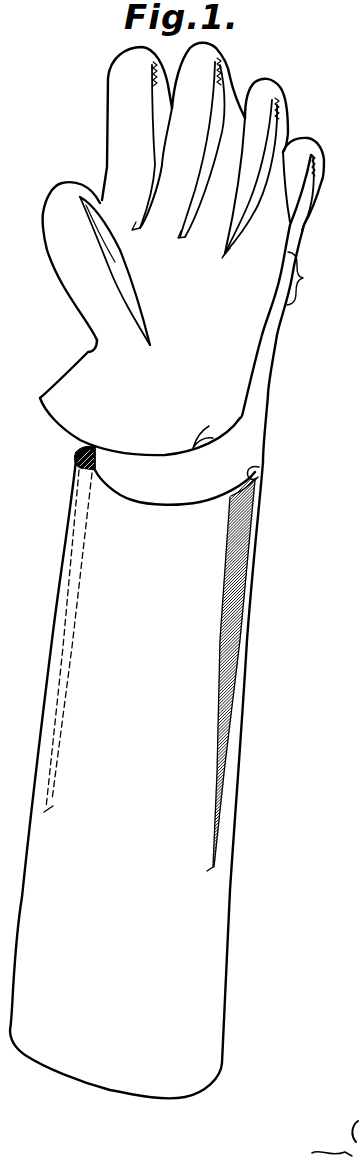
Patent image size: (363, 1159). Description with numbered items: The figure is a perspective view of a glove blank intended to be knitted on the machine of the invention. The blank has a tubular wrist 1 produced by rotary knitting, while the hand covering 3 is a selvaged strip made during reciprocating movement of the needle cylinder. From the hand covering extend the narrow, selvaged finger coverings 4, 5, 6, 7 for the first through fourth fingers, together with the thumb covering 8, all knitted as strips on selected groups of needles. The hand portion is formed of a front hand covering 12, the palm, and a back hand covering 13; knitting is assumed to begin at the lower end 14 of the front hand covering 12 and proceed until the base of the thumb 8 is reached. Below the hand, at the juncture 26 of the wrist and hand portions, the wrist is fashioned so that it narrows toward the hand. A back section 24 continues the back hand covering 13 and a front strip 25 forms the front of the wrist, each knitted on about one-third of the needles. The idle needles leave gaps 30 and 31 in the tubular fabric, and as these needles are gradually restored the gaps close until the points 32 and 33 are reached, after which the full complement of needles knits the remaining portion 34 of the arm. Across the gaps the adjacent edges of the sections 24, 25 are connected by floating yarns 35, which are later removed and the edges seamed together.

The wrist 1 is at (146, 663).
The hand covering 3 is at (302, 278).
The finger covering 4 is at (128, 80).
The finger covering 5 is at (214, 54).
The finger covering 6 is at (273, 90).
The finger covering 7 is at (310, 152).
The thumb covering 8 is at (63, 258).
The front hand covering 12 is at (238, 337).
The back hand covering 13 is at (262, 410).
The lower end 14 is at (165, 452).
The back section of wrist 24 is at (250, 535).
The front strip of wrist 25 is at (97, 572).
The juncture 26 is at (259, 466).
The gap 30 is at (248, 500).
The gap 31 is at (83, 452).
The point 32 is at (207, 871).
The point 33 is at (46, 814).
The remaining portion of the arm 34 is at (193, 940).
The floating yarns 35 is at (94, 467).